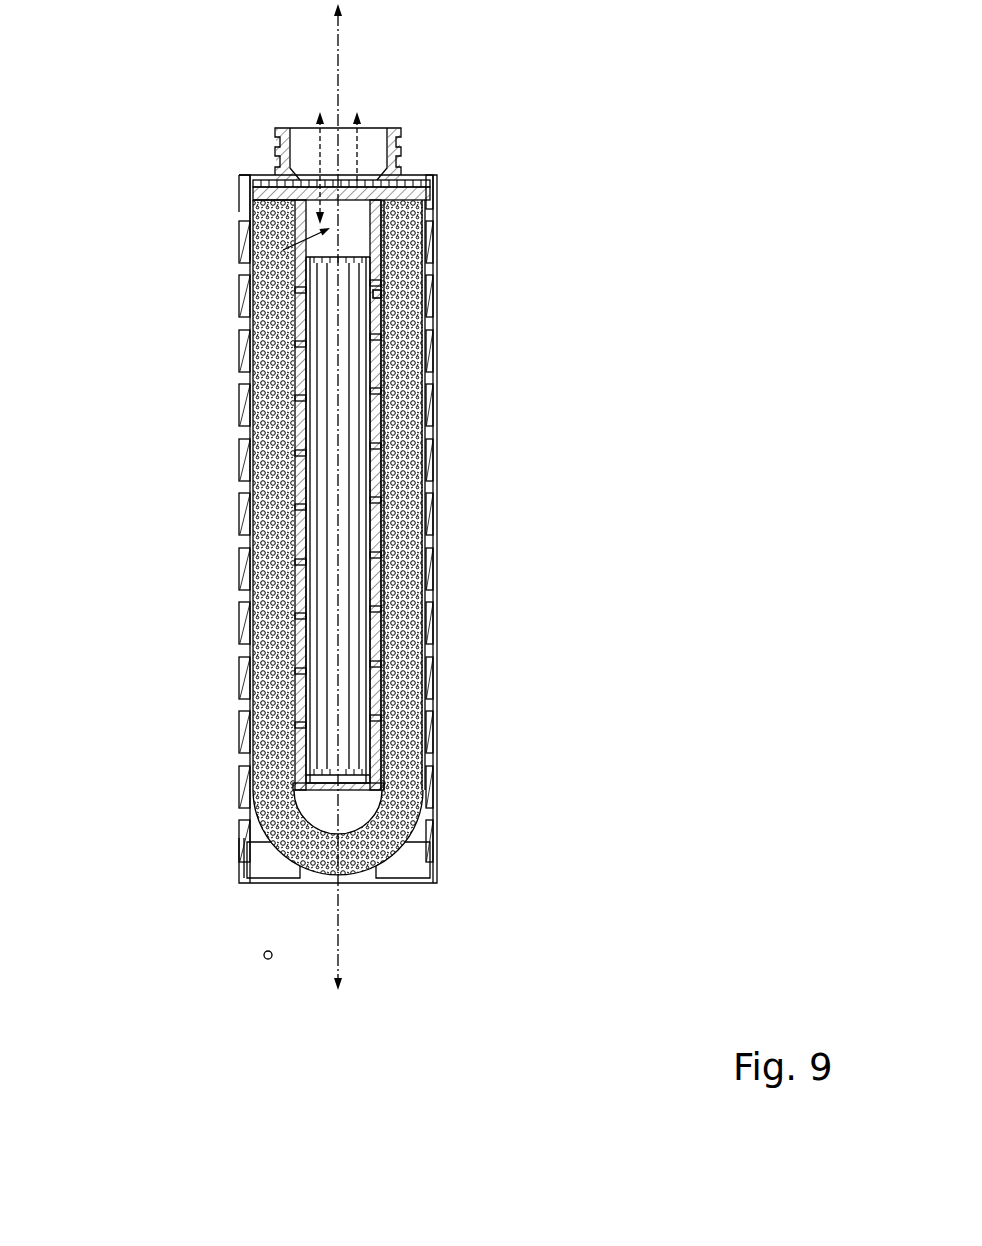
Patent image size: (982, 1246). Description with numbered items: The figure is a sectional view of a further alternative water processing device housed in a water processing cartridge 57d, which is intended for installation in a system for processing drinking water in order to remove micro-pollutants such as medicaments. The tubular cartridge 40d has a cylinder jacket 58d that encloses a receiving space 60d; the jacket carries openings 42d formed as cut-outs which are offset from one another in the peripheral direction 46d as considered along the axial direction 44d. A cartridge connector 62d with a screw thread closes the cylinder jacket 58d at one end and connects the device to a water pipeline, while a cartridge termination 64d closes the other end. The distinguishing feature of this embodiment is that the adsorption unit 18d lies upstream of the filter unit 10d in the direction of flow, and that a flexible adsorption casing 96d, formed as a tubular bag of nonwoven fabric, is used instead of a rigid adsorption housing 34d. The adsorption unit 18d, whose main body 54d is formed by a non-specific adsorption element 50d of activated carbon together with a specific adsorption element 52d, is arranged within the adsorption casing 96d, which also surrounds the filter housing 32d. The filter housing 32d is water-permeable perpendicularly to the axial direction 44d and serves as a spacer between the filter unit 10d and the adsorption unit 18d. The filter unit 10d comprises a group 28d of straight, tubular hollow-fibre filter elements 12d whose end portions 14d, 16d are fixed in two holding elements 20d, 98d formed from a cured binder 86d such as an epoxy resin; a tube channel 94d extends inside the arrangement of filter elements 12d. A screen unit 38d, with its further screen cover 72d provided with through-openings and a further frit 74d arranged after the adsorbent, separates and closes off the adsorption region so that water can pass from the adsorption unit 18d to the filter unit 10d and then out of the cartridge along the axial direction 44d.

The filter unit 10d is at (300, 512).
The filter elements 12d is at (328, 690).
The end portion 14d is at (317, 205).
The end portion 16d is at (252, 784).
The adsorption unit 18d is at (428, 285).
The holding element 20d is at (328, 240).
The group of filter elements 28d is at (306, 631).
The filter housing 32d is at (290, 465).
The adsorption housing 34d is at (432, 256).
The screen unit 38d is at (166, 232).
The cartridge 40d is at (478, 455).
The openings 42d is at (440, 596).
The axial direction 44d is at (340, 902).
The peripheral direction 46d is at (264, 955).
The non-specific adsorption element 50d is at (283, 250).
The specific adsorption element 52d is at (262, 197).
The main body 54d is at (432, 318).
The water processing cartridge 57d is at (512, 90).
The cylinder jacket 58d is at (430, 512).
The receiving space 60d is at (270, 855).
The cartridge connector 62d is at (437, 178).
The cartridge termination 64d is at (437, 881).
The further screen cover 72d is at (437, 183).
The further frit 74d is at (433, 213).
The binder 86d is at (255, 285).
The tube channel 94d is at (428, 742).
The adsorption casing 96d is at (426, 683).
The holding element 98d is at (430, 798).